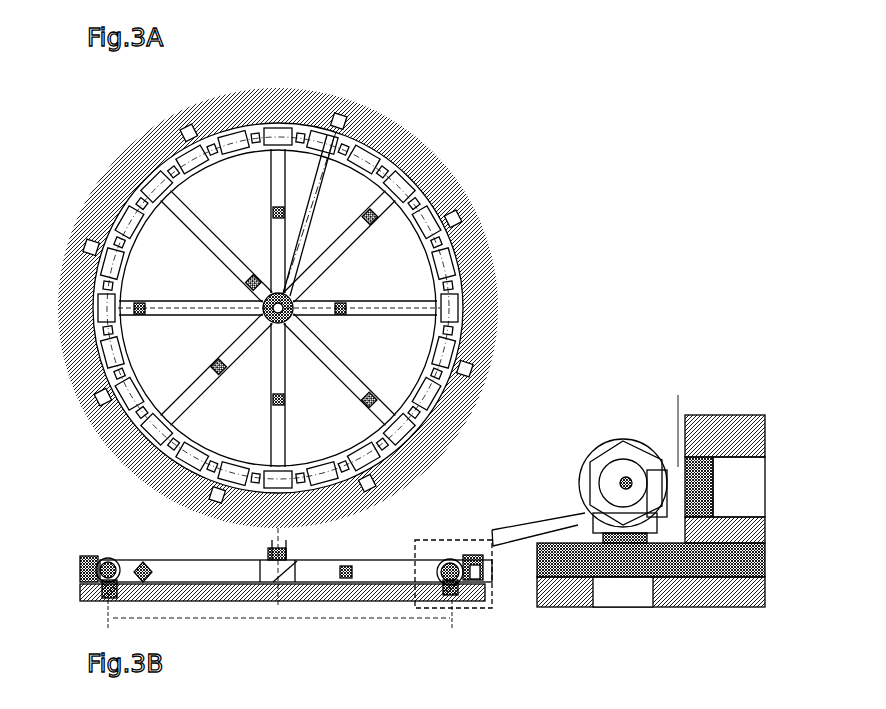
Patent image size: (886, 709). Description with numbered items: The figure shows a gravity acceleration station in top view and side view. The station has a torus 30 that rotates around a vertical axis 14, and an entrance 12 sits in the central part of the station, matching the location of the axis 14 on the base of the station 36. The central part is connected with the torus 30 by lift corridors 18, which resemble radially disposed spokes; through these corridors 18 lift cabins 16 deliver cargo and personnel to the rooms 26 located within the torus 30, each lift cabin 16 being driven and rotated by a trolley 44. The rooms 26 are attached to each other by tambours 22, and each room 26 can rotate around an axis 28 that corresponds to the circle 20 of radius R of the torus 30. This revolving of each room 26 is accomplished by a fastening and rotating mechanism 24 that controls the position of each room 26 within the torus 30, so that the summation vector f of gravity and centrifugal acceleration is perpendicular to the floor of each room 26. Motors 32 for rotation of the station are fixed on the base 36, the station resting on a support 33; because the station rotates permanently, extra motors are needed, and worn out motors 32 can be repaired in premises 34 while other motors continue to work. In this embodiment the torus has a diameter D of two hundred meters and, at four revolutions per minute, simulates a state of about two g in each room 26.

In FIG. 3A, the entrance 12 is at (325, 283).
In FIG. 3A, the vertical axis 14 is at (440, 330).
In FIG. 3B, the vertical axis 14 is at (288, 546).
In FIG. 3A, the lift cabin 16 is at (402, 444).
In FIG. 3B, the lift cabin 16 is at (268, 553).
In FIG. 3A, the lift corridors 18 is at (348, 238).
In FIG. 3B, the lift corridors 18 is at (215, 572).
In FIG. 3A, the circle of torus 20 is at (318, 212).
In FIG. 3A, the tambour connecting rooms 22 is at (340, 130).
In FIG. 3B, the tambour connecting rooms 22 is at (578, 484).
In FIG. 3A, the fastening and rotating mechanism 24 is at (125, 230).
In FIG. 3B, the fastening and rotating mechanism 24 is at (582, 505).
In FIG. 3A, the rooms for living and working 26 is at (112, 380).
In FIG. 3A, the axis for rotation of the rooms 28 is at (436, 416).
In FIG. 3B, the axis for rotation of the rooms 28 is at (570, 470).
In FIG. 3A, the torus 30 is at (442, 272).
In FIG. 3B, the torus 30 is at (592, 456).
In FIG. 3A, the motor for rotation of the station 32 is at (468, 373).
In FIG. 3B, the motor for rotation of the station 32 is at (766, 520).
In FIG. 3A, the support of the station 33 is at (455, 358).
In FIG. 3B, the support of the station 33 is at (455, 562).
In FIG. 3A, the premises for motor repairing 34 is at (382, 486).
In FIG. 3B, the premises for motor repairing 34 is at (766, 487).
In FIG. 3A, the base of the station 36 is at (437, 437).
In FIG. 3B, the base of the station 36 is at (600, 602).
In FIG. 3B, the trolley for drive and rotation of the lift cabin 44 is at (297, 561).